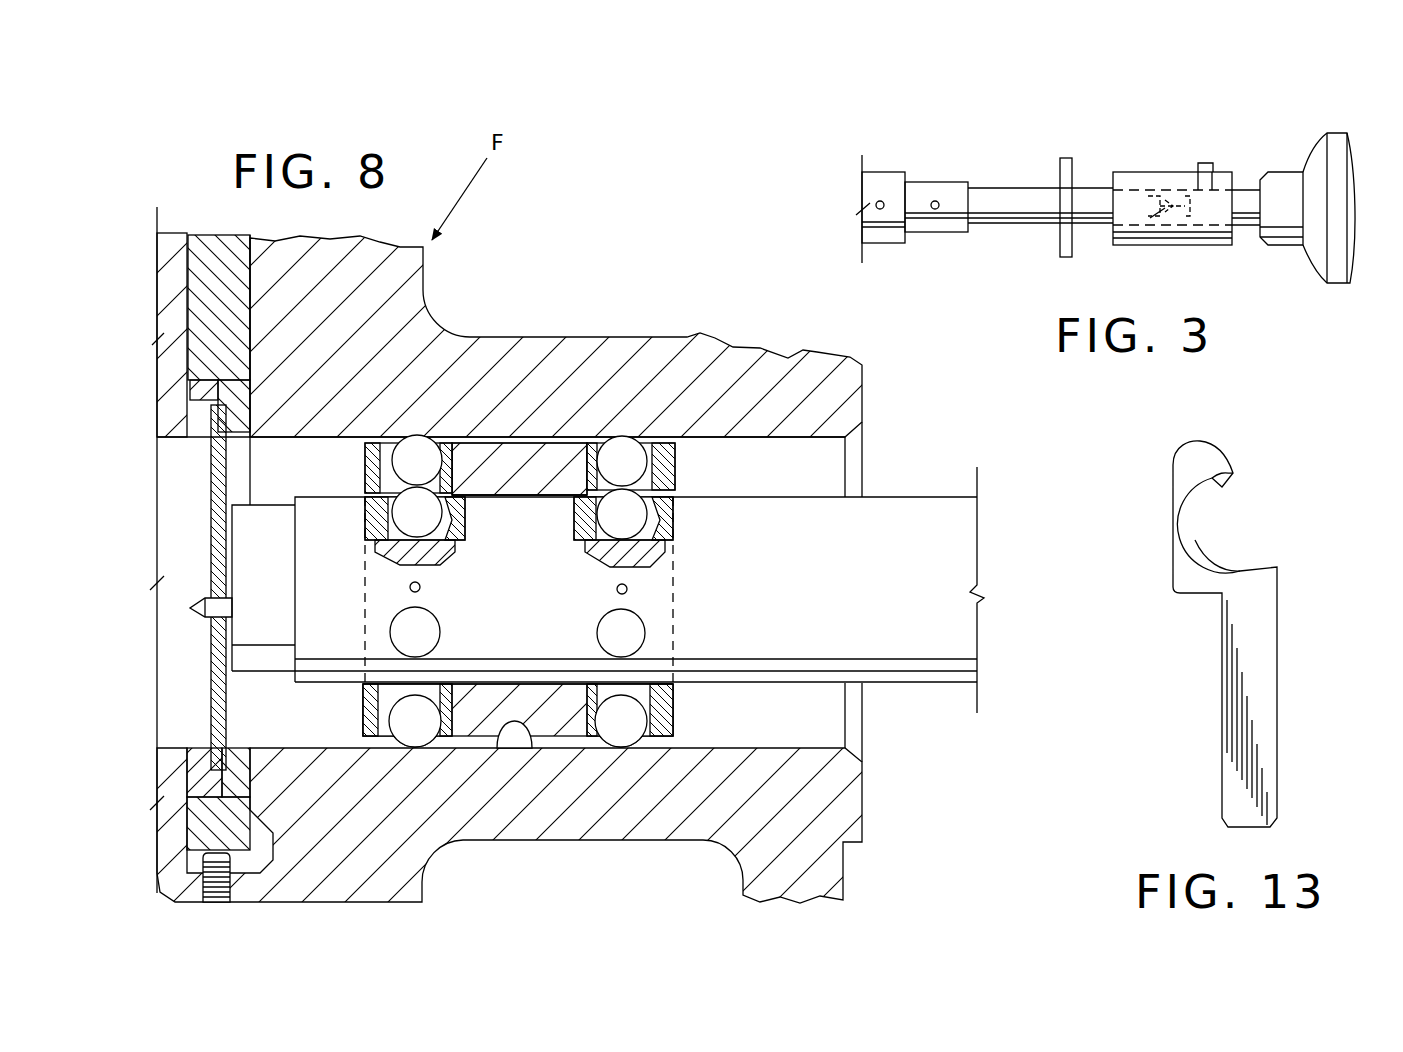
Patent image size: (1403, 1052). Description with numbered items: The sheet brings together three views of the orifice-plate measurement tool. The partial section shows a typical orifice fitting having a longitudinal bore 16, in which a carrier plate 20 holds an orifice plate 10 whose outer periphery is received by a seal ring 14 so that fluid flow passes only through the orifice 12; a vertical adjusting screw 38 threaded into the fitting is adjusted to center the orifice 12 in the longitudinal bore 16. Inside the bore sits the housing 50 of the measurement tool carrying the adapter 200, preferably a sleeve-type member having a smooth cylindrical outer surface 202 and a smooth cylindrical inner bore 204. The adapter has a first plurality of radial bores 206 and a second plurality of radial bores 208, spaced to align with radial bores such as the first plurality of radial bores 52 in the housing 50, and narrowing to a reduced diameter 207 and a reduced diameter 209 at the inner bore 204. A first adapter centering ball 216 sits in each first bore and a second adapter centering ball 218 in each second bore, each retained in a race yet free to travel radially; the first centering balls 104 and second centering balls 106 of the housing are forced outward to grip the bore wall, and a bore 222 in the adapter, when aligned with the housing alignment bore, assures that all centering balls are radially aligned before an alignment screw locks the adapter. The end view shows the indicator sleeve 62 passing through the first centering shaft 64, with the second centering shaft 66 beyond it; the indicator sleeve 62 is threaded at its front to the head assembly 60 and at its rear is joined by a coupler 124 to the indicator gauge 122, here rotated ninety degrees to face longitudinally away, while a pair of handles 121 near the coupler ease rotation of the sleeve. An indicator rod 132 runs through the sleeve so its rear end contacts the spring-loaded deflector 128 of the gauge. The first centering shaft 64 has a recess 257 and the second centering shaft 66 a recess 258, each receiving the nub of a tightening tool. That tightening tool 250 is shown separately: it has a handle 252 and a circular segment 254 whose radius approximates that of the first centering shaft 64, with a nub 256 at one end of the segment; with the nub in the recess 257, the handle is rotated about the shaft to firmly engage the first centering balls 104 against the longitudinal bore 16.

In FIG. 8, the orifice plate 10 is at (211, 473).
In FIG. 8, the orifice 12 is at (192, 606).
In FIG. 8, the seal ring 14 is at (180, 395).
In FIG. 8, the longitudinal bore 16 is at (533, 716).
In FIG. 8, the carrier plate 20 is at (205, 824).
In FIG. 8, the vertical adjusting screw 38 is at (205, 882).
In FIG. 8, the housing 50 is at (923, 517).
In FIG. 8, the first plurality of radial bores 52 is at (440, 543).
In FIG. 8, the head assembly 60 is at (222, 538).
In FIG. 3, the indicator sleeve 62 is at (995, 188).
In FIG. 3, the first centering shaft 64 is at (930, 180).
In FIG. 3, the second centering shaft 66 is at (873, 170).
In FIG. 8, the first centering balls 104 is at (420, 513).
In FIG. 8, the second centering balls 106 is at (634, 517).
In FIG. 3, the handles 121 is at (1062, 160).
In FIG. 3, the indicator gauge 122 is at (1337, 272).
In FIG. 3, the coupler 124 is at (1140, 172).
In FIG. 3, the spring-loaded deflector 128 is at (1173, 200).
In FIG. 3, the indicator rod 132 is at (1165, 223).
In FIG. 8, the adapter 200 is at (518, 438).
In FIG. 8, the smooth cylindrical outer surface 202 is at (565, 452).
In FIG. 8, the smooth cylindrical inner bore 204 is at (517, 498).
In FIG. 8, the first plurality of radial bores 206 is at (365, 463).
In FIG. 8, the reduced diameter 207 is at (392, 509).
In FIG. 8, the second plurality of radial bores 208 is at (640, 722).
In FIG. 8, the reduced diameter 209 is at (632, 681).
In FIG. 8, the first adapter centering balls 216 is at (420, 452).
In FIG. 8, the second adapter centering balls 218 is at (640, 462).
In FIG. 8, the bore 222 is at (408, 590).
In FIG. 13, the tightening tool 250 is at (1220, 648).
In FIG. 13, the handle 252 is at (1245, 773).
In FIG. 13, the circular segment 254 is at (1213, 558).
In FIG. 13, the nub 256 is at (1237, 480).
In FIG. 3, the recess 257 is at (935, 210).
In FIG. 3, the recess 258 is at (880, 210).